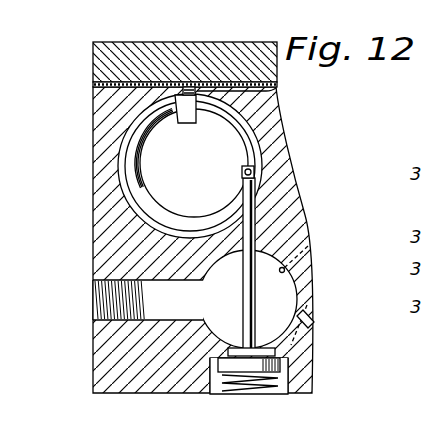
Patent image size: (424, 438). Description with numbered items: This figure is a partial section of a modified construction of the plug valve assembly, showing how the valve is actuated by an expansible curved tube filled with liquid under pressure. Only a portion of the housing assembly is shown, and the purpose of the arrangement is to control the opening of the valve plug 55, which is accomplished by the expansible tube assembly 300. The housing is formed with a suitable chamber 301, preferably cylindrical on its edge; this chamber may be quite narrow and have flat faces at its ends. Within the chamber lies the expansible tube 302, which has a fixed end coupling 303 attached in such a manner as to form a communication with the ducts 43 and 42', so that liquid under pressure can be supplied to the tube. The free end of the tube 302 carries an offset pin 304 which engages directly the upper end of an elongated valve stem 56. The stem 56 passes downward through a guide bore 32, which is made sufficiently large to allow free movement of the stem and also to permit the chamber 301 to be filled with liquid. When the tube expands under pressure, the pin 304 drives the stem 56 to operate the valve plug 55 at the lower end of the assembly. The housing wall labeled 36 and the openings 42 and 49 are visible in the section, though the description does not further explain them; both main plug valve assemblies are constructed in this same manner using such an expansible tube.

The expansible tube assembly 300 is at (115, 150).
The chamber 301 is at (280, 134).
The expansible tube 302 is at (146, 135).
The fixed end coupling 303 is at (188, 112).
The offset pin 304 is at (255, 172).
The cover plate 36 is at (142, 46).
The duct 43 is at (229, 88).
The duct 42' is at (253, 92).
The guide bore 32 is at (257, 225).
The passage 42 is at (314, 289).
The vent opening 49 is at (313, 322).
The valve stem 56 is at (246, 296).
The valve plug 55 is at (240, 366).